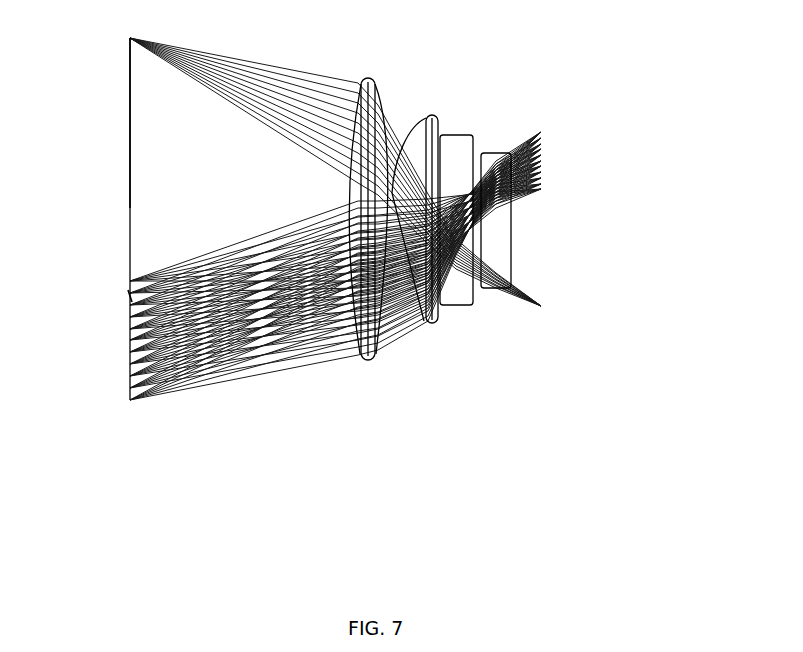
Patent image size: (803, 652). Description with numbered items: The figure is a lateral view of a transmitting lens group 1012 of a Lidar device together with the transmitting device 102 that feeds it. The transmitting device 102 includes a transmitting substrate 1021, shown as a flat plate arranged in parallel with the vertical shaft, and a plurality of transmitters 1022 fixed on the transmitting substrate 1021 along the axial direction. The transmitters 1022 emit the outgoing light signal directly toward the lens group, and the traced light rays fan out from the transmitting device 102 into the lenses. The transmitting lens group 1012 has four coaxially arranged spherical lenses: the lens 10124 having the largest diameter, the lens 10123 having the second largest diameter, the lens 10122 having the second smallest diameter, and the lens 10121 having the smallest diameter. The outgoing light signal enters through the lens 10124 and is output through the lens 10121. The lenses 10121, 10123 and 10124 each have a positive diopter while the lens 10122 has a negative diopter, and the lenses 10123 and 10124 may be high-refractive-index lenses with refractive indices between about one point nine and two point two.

The transmitting device 102 is at (122, 392).
The transmitting substrate 1021 is at (122, 152).
The transmitters 1022 is at (122, 288).
The transmitting lens group 1012 is at (516, 328).
The lens having the smallest diameter 10121 is at (502, 287).
The lens having the second smallest diameter 10122 is at (463, 300).
The lens having the second largest diameter 10123 is at (428, 318).
The lens having the largest diameter 10124 is at (352, 355).